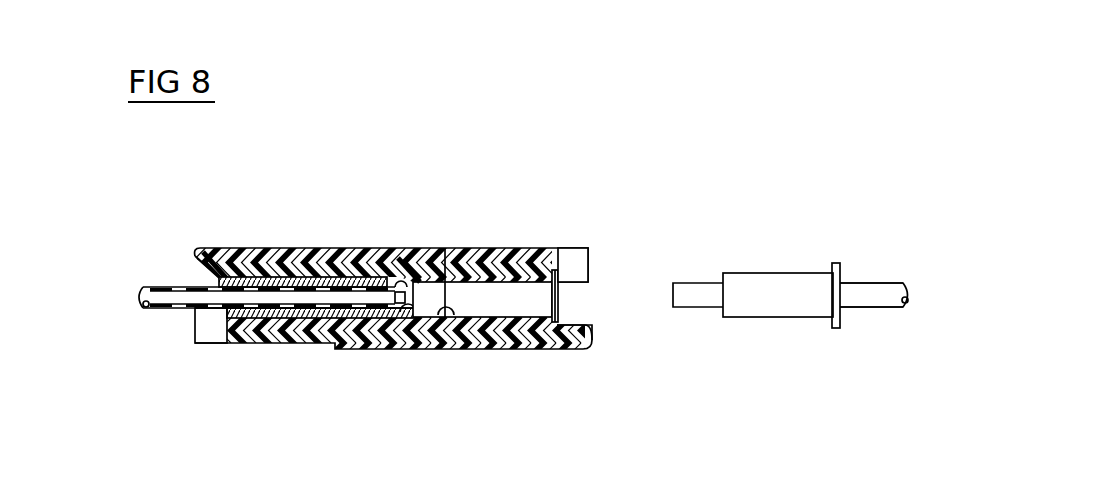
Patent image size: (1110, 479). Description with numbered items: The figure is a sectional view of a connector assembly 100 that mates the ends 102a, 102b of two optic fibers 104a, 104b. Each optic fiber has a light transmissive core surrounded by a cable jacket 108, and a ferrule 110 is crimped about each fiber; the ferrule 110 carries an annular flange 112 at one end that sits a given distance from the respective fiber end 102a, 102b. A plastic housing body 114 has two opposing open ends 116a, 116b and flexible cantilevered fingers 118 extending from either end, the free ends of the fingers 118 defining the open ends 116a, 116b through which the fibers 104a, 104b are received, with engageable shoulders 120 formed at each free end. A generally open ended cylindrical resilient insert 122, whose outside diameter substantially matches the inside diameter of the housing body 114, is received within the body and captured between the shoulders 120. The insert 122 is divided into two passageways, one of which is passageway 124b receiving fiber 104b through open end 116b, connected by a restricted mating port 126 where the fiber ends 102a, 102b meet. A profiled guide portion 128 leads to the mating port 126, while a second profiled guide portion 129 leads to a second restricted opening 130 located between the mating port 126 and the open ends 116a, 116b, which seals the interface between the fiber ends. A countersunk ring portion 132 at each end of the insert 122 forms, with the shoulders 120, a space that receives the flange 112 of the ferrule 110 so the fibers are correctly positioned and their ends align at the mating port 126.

The connector assembly 100 is at (584, 122).
The end of first optic fiber 102a is at (397, 285).
The end of second optic fiber 102b is at (667, 300).
The first optic fiber 104a is at (158, 330).
The second optic fiber 104b is at (896, 325).
The cable jacket 108 is at (200, 307).
The ferrule 110 is at (317, 255).
The annular flange 112 is at (222, 256).
The housing body 114 is at (349, 246).
The first open end 116a is at (183, 268).
The second open end 116b is at (580, 294).
The flexible cantilevered finger 118 is at (275, 280).
The engageable shoulder 120 is at (200, 252).
The resilient insert 122 is at (305, 325).
The second passageway 124b is at (540, 335).
The mating port 126 is at (415, 283).
The profiled guide portion 128 is at (420, 318).
The second profiled guide portion 129 is at (452, 318).
The second restricted opening 130 is at (452, 277).
The countersunk ring portion 132 is at (563, 272).